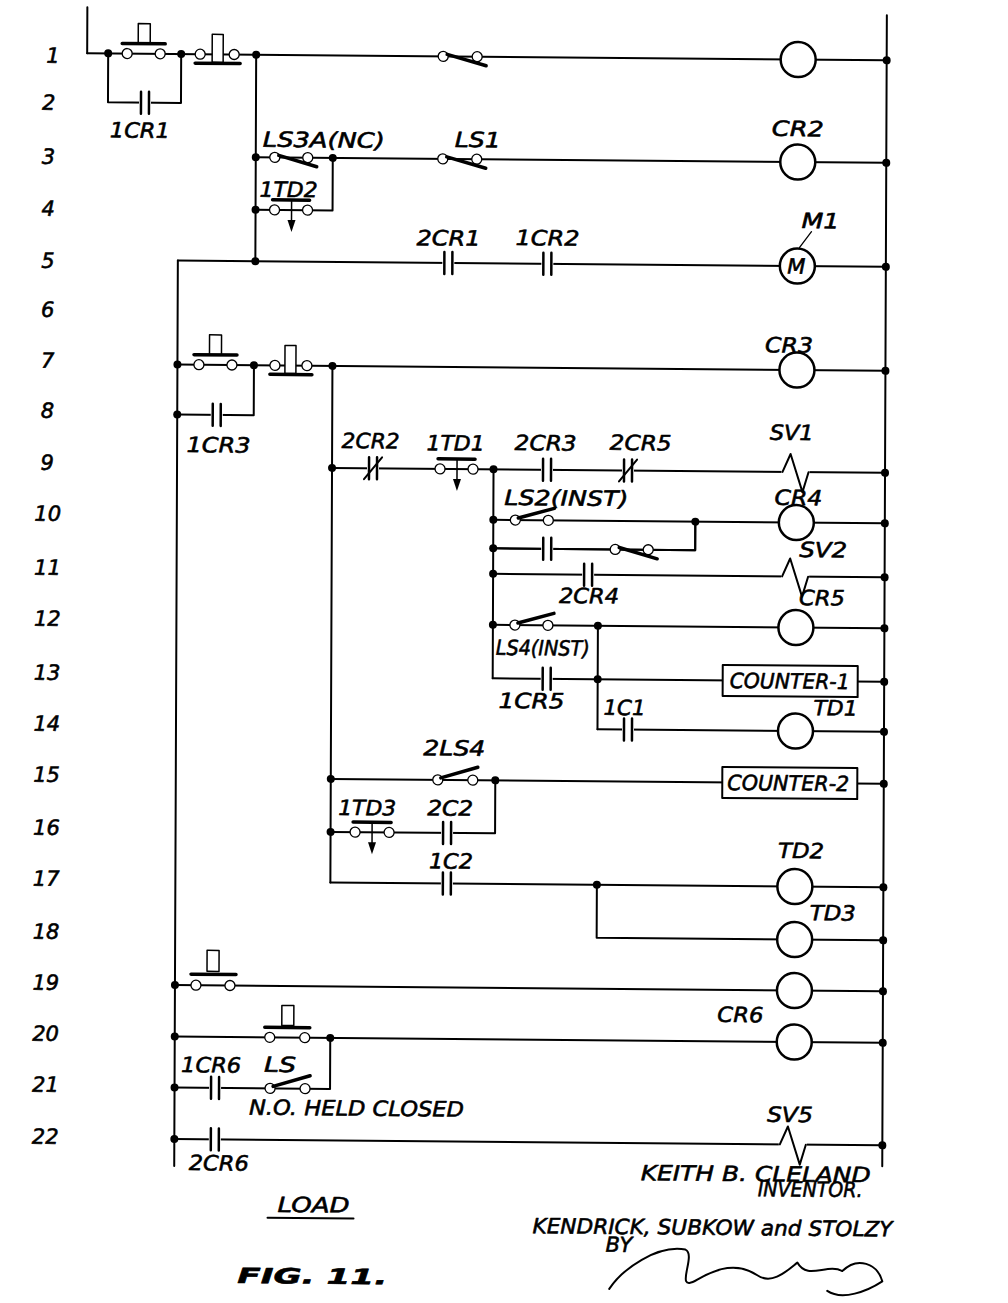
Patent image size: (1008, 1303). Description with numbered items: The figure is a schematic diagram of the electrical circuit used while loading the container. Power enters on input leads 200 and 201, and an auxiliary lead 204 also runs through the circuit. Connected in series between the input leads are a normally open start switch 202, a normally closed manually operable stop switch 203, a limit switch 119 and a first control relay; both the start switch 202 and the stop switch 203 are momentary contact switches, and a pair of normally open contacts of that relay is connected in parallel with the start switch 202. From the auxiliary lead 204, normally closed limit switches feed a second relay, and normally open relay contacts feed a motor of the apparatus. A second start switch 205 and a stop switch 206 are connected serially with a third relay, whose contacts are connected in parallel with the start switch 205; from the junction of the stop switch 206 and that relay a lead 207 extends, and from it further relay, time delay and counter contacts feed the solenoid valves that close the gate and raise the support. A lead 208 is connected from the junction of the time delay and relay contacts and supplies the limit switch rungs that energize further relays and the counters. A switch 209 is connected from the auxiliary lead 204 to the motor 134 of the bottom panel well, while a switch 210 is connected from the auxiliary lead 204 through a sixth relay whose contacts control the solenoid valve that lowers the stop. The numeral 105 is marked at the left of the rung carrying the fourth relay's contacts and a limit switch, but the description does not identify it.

The input lead 200 is at (84, 34).
The input lead 201 is at (817, 67).
The start switch 202 is at (142, 48).
The stop switch 203 is at (215, 68).
The auxiliary lead 204 is at (256, 98).
The second start switch 205 is at (215, 358).
The stop switch 206 is at (286, 380).
The lead 207 is at (330, 491).
The lead 208 is at (491, 500).
The switch 209 is at (234, 975).
The switch 210 is at (312, 1026).
The limit switch 119 is at (460, 53).
The motor 134 is at (782, 978).
The relay contact and limit switch line 105 is at (364, 539).